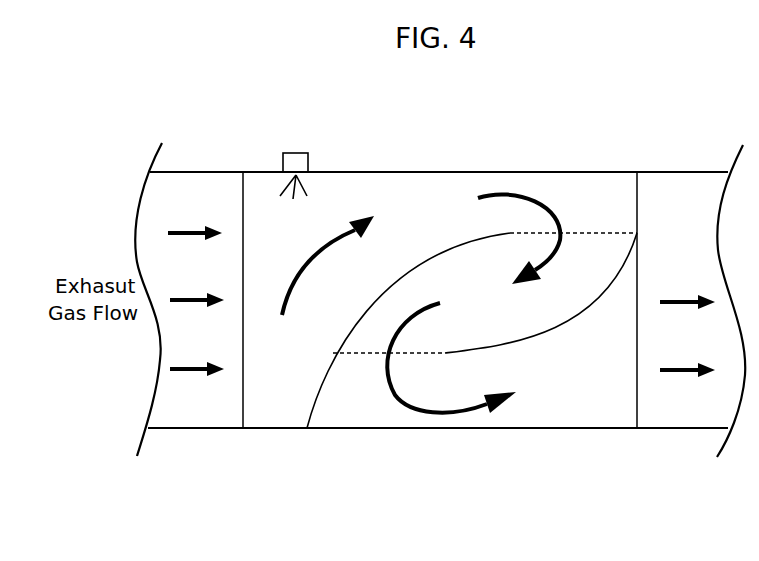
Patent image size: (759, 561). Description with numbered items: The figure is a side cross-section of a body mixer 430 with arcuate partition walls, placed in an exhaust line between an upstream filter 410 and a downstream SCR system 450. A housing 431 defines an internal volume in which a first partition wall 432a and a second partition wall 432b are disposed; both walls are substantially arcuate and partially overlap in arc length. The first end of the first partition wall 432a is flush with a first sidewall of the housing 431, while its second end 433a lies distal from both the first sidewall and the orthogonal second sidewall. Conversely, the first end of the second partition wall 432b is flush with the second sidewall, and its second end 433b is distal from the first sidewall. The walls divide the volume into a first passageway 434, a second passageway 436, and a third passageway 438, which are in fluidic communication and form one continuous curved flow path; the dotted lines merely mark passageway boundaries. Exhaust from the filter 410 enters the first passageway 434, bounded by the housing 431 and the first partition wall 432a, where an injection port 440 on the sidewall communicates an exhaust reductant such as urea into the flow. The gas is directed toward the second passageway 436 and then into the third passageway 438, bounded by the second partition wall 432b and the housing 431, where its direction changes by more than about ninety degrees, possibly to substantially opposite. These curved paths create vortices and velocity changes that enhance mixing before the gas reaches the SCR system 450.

The filter 410 is at (197, 410).
The body mixer 430 is at (424, 128).
The housing 431 is at (467, 430).
The first partition wall 432a is at (310, 405).
The second partition wall 432b is at (582, 318).
The first partition wall second end 433a is at (510, 233).
The second partition wall second end 433b is at (450, 355).
The first passageway 434 is at (281, 387).
The second passageway 436 is at (580, 267).
The third passageway 438 is at (550, 397).
The injection port 440 is at (292, 152).
The SCR system 450 is at (692, 415).